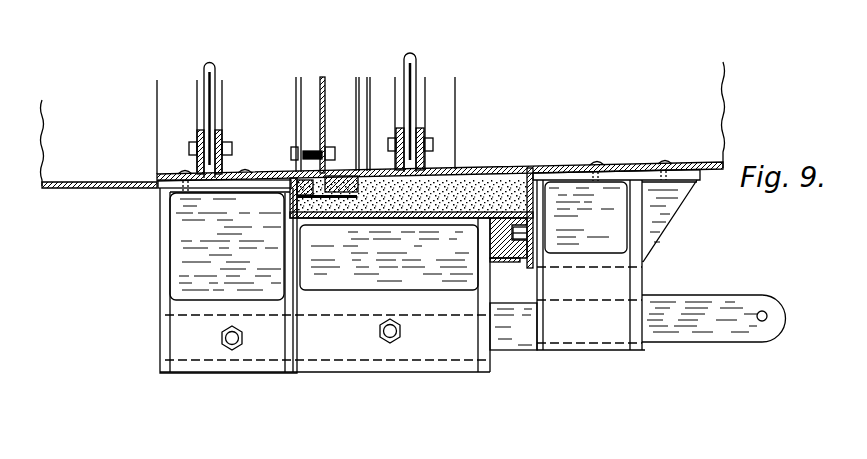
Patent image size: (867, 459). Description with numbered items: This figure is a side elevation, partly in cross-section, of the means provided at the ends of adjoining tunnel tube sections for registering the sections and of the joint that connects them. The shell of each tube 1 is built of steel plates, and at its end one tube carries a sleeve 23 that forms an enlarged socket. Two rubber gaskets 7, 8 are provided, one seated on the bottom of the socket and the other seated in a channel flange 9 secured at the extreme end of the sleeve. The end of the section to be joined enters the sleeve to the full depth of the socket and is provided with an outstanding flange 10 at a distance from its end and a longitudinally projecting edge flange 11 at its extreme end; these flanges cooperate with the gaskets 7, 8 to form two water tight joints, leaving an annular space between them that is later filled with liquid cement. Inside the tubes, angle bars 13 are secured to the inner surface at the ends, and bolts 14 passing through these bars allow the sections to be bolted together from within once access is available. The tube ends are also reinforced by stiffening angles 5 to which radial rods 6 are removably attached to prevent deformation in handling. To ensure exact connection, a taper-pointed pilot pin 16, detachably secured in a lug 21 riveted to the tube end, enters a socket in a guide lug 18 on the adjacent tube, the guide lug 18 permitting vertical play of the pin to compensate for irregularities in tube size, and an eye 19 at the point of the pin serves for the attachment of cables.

The tube 1 is at (86, 189).
The stiffening angle 5 is at (196, 141).
The radial rod 6 is at (205, 89).
The rubber gasket 7 is at (293, 208).
The rubber gasket 8 is at (510, 263).
The channel flange 9 is at (492, 238).
The outstanding flange 10 is at (529, 172).
The edge flange 11 is at (293, 203).
The angle bar 13 is at (296, 149).
The bolt 14 is at (312, 157).
The pilot pin 16 is at (693, 298).
The guide lug 18 is at (609, 331).
The eye 19 is at (764, 311).
The lug 21 is at (384, 361).
The sleeve 23 is at (382, 219).